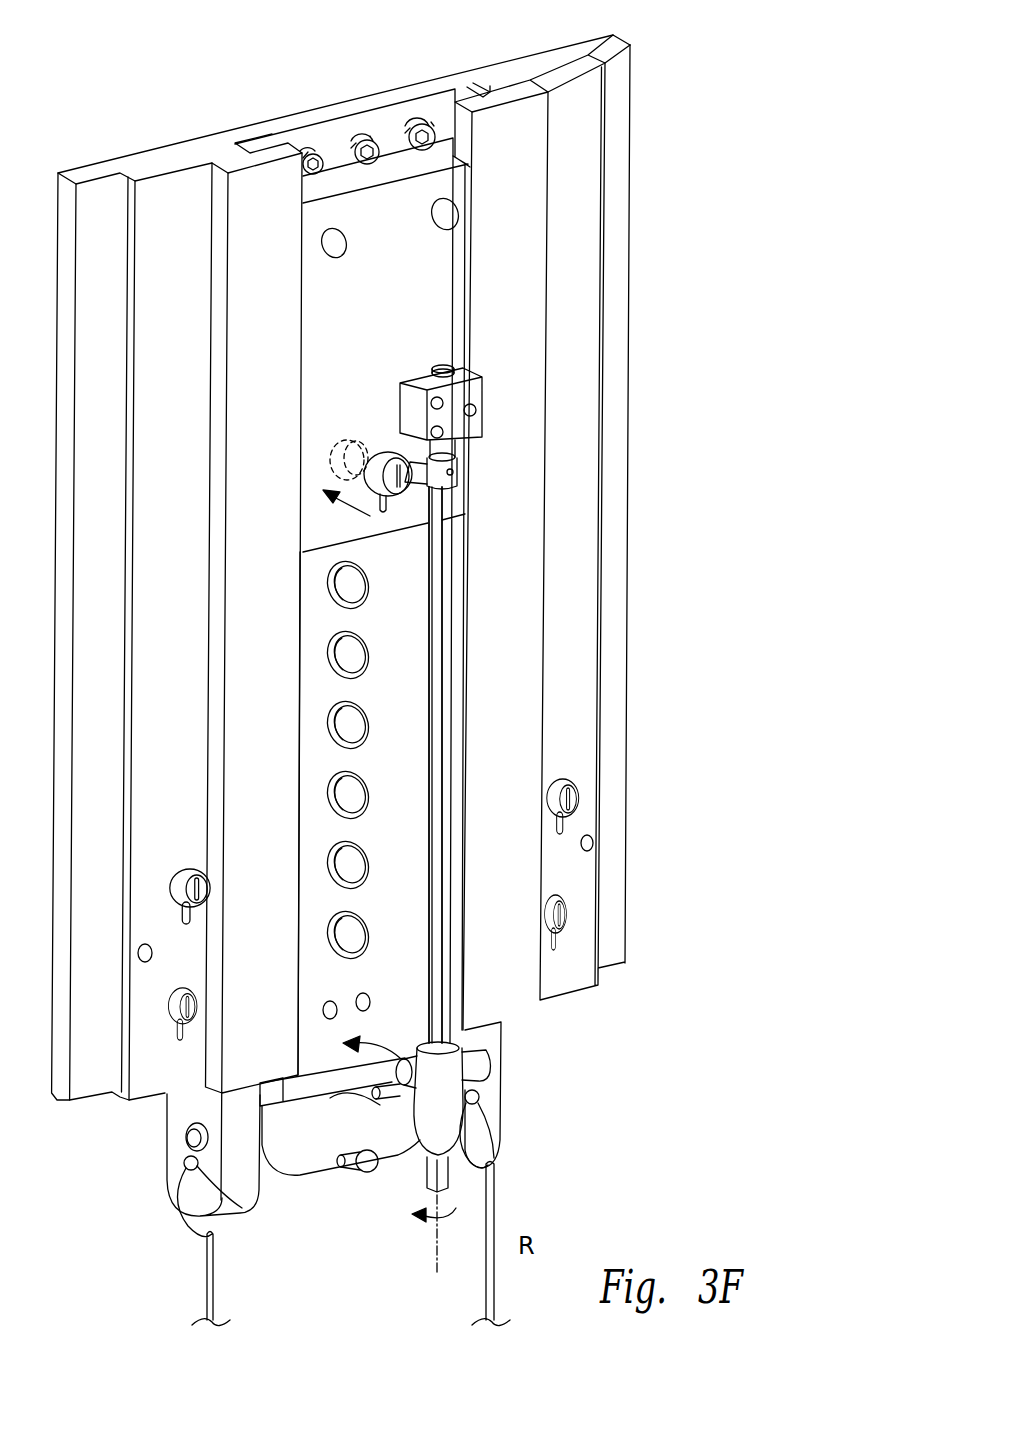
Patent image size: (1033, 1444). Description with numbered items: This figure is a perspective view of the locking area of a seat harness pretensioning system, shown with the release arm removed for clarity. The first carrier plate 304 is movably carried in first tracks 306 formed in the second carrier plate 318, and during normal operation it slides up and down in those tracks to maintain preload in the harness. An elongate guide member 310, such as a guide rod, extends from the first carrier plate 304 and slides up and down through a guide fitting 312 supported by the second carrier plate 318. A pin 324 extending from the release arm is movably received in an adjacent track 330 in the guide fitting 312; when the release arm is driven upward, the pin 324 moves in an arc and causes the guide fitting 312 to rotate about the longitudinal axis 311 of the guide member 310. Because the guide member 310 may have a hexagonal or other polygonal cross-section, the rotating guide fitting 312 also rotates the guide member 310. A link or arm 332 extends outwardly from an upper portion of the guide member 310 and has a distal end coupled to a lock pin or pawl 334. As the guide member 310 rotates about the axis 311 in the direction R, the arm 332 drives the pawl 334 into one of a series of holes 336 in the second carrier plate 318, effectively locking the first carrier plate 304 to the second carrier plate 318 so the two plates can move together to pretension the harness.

The first carrier plate 304 is at (426, 270).
The first tracks 306 is at (467, 92).
The elongate guide member 310 is at (445, 548).
The longitudinal axis 311 is at (437, 1250).
The guide fitting 312 is at (453, 1107).
The second carrier plate 318 is at (403, 832).
The pin 324 is at (327, 1177).
The track 330 is at (400, 1057).
The arm 332 is at (457, 470).
The pawl 334 is at (378, 448).
The holes 336 is at (355, 795).